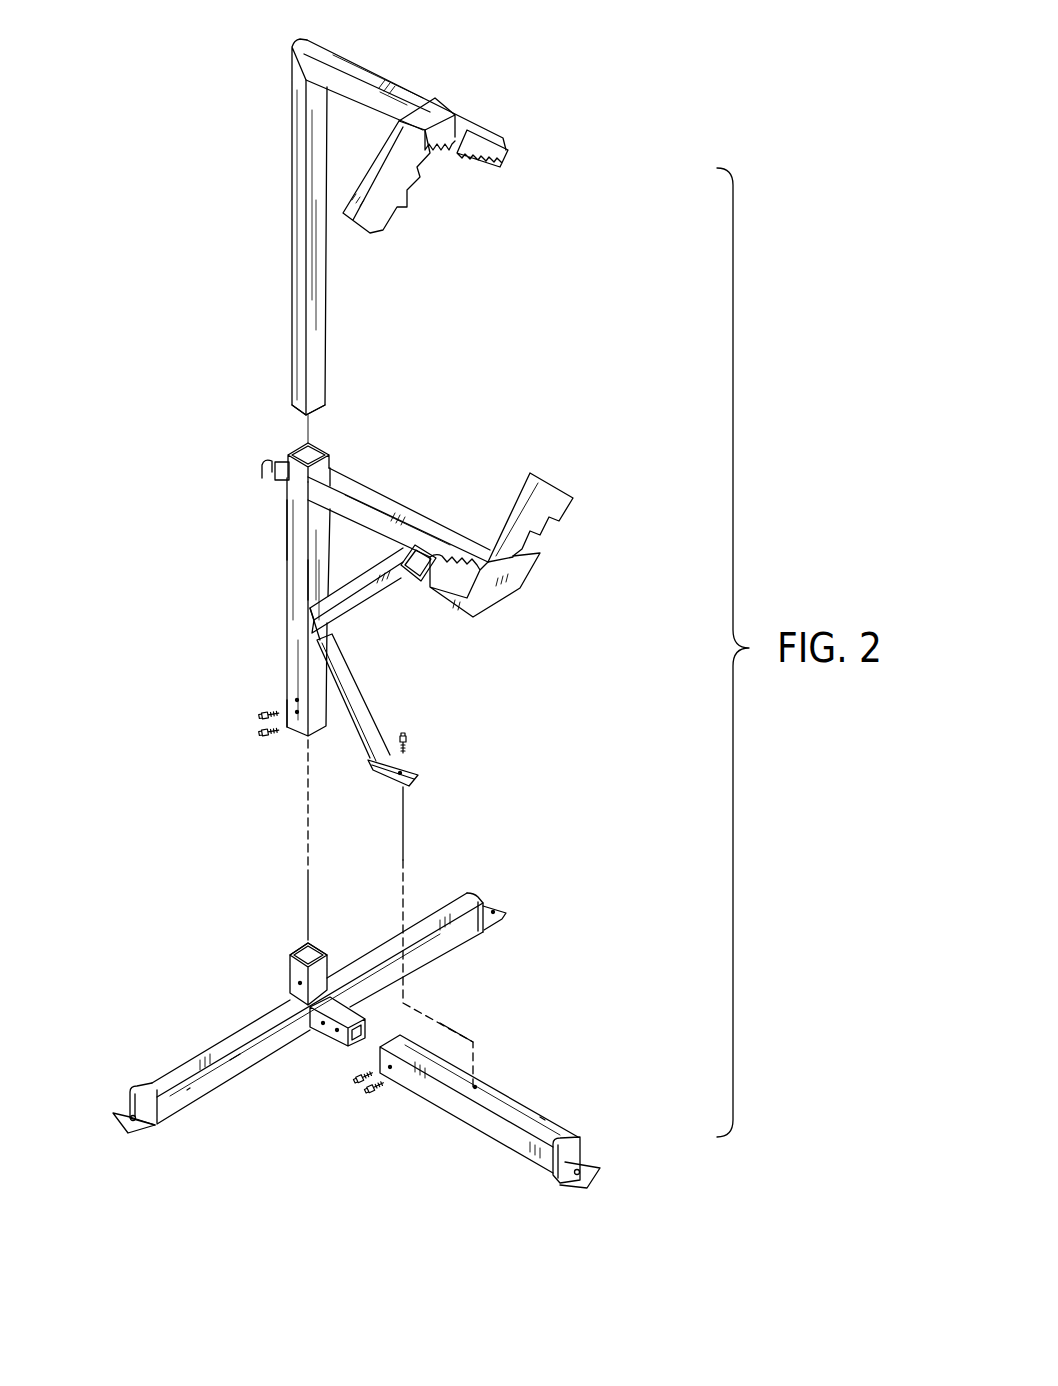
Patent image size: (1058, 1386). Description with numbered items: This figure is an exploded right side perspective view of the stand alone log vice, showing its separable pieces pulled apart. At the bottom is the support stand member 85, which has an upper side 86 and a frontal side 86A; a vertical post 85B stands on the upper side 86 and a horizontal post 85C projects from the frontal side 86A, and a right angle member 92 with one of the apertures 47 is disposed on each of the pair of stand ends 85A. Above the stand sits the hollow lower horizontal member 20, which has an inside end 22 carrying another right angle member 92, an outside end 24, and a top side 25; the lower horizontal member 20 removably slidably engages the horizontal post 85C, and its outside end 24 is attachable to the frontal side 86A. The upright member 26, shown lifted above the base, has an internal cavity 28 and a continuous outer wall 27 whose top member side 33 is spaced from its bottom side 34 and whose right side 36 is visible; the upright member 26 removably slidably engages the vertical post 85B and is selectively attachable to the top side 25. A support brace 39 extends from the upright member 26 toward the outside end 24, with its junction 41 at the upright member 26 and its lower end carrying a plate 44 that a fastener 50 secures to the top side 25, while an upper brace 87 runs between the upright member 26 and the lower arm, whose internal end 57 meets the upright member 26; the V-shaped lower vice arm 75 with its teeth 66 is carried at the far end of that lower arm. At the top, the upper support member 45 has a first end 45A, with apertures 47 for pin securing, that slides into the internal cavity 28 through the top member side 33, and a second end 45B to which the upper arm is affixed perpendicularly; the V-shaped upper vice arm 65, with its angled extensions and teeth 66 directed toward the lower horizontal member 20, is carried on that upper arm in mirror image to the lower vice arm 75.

The lower horizontal member 20 is at (467, 1120).
The inside end 22 is at (580, 1133).
The outside end 24 is at (440, 1022).
The top side 25 is at (540, 1118).
The upright member 26 is at (288, 547).
The outer wall 27 is at (307, 580).
The internal cavity 28 is at (315, 448).
The top member side 33 is at (292, 452).
The bottom side 34 is at (297, 740).
The right side 36 is at (297, 512).
The support brace 39 is at (360, 697).
The brace junction 41 is at (321, 640).
The plate 44 is at (383, 778).
The upper support member 45 is at (292, 156).
The first end 45A is at (320, 413).
The second end 45B is at (305, 47).
The apertures 47 is at (297, 700).
The fastener 50 is at (262, 732).
The internal end 57 is at (337, 480).
The V-shaped upper vice arm 65 is at (462, 120).
The teeth 66 is at (437, 153).
The V-shaped lower vice arm 75 is at (540, 540).
The support stand member 85 is at (188, 1088).
The stand ends 85A is at (470, 897).
The vertical post 85B is at (313, 945).
The horizontal post 85C is at (317, 1032).
The upper side 86 is at (187, 1067).
The frontal side 86A is at (230, 1060).
The upper brace 87 is at (378, 604).
The right angle member 92 is at (497, 920).